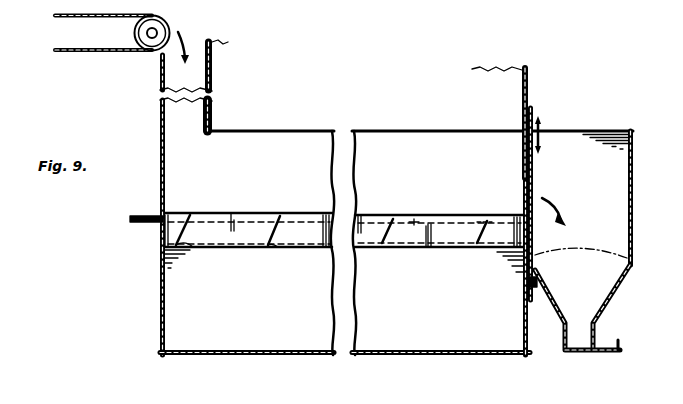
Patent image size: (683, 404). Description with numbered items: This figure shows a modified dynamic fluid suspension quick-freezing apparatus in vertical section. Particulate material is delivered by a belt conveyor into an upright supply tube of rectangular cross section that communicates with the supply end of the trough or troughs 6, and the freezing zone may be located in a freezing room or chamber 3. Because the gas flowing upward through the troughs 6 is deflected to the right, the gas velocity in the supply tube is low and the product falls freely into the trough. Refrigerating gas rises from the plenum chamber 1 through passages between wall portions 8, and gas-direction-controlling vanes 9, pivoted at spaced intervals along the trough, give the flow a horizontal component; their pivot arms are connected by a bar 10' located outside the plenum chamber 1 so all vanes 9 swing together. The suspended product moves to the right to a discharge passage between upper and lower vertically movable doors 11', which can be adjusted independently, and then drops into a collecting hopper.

The plenum chamber 1 is at (432, 250).
The freezing room or chamber 3 is at (212, 62).
The trough 6 is at (396, 205).
The wall portions 8 is at (308, 232).
The gas-direction-controlling vanes 9 is at (192, 250).
The bar 10' is at (270, 222).
The vertically movable doors 11' is at (550, 204).